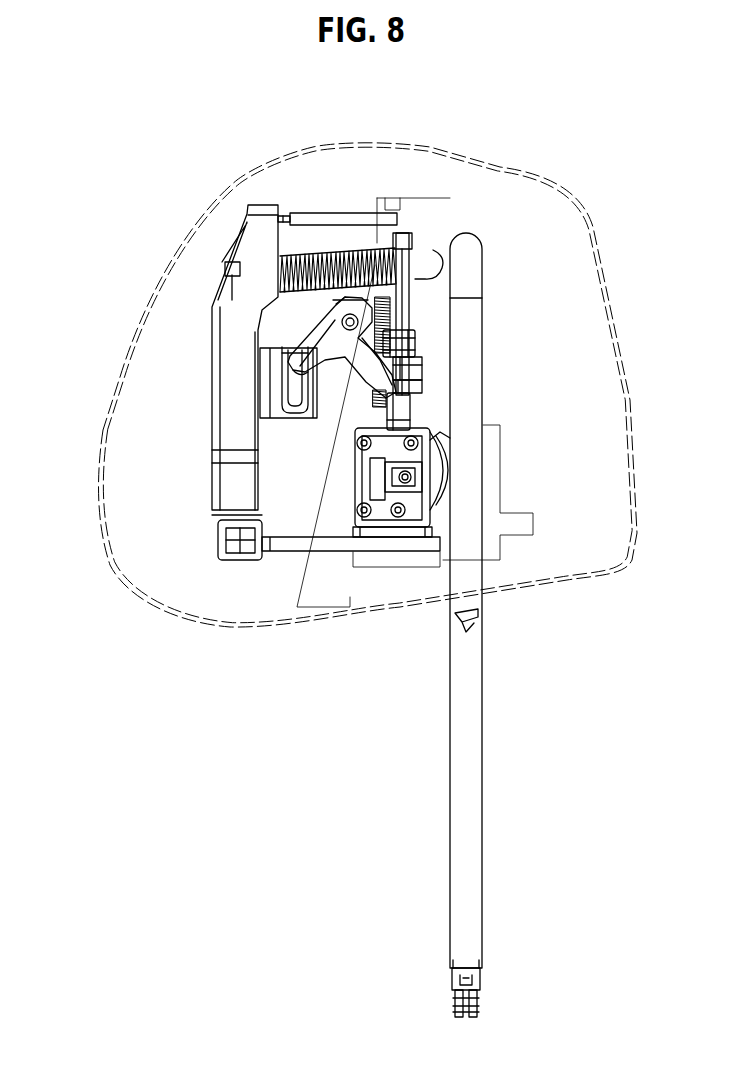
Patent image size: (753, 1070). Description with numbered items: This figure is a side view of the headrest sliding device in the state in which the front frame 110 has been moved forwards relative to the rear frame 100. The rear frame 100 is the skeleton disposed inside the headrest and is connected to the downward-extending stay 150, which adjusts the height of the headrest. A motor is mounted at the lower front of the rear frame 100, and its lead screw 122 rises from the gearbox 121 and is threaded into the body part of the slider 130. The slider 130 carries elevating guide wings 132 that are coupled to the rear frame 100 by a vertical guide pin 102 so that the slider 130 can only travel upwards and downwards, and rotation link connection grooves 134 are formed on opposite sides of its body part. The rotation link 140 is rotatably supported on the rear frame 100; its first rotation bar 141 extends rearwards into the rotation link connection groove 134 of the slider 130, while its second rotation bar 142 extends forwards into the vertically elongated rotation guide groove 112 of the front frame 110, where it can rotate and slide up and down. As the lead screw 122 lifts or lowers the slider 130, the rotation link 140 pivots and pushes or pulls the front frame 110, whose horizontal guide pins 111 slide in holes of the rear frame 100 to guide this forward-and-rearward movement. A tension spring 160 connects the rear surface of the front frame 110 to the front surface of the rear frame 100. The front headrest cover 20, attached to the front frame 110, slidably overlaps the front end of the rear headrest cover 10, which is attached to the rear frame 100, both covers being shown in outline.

The rear headrest cover 10 is at (593, 227).
The front headrest cover 20 is at (223, 190).
The rear frame 100 is at (430, 568).
The vertical guide pin 102 is at (403, 312).
The front frame 110 is at (210, 427).
The horizontal guide pin 111 is at (340, 213).
The rotation guide groove 112 is at (297, 402).
The gearbox 121 is at (380, 447).
The lead screw 122 is at (370, 403).
The slider 130 is at (425, 338).
The elevating guide wing 132 is at (403, 348).
The rotation link connection groove 134 is at (403, 370).
The rotation link 140 is at (299, 339).
The first rotation bar 141 is at (392, 381).
The second rotation bar 142 is at (293, 376).
The stay 150 is at (472, 787).
The spring 160 is at (300, 262).